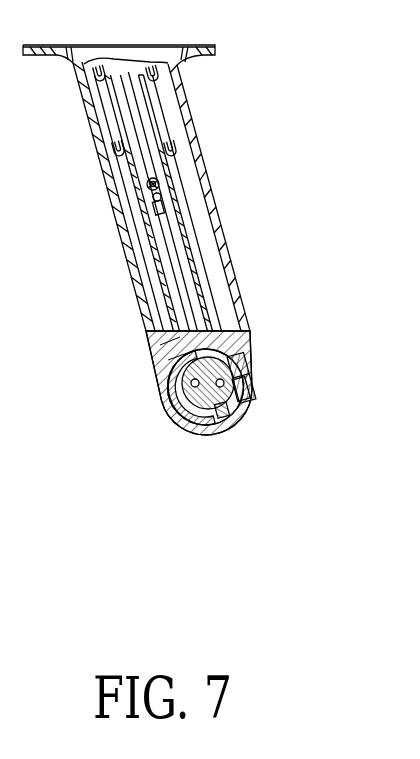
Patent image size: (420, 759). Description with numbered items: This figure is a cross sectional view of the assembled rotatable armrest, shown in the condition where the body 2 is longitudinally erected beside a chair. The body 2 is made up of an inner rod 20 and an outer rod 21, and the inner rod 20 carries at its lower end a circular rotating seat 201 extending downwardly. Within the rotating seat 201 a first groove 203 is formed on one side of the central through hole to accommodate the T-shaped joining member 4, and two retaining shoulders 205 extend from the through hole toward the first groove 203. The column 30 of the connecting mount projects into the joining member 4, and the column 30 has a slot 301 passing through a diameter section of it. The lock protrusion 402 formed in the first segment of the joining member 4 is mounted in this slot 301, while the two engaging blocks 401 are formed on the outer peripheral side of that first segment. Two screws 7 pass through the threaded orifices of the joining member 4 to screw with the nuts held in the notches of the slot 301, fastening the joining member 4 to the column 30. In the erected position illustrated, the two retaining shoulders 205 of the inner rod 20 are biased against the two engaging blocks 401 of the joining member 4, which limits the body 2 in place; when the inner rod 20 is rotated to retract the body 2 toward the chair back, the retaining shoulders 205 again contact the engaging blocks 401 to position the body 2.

The body 2 is at (207, 260).
The inner rod 20 is at (120, 237).
The outer rod 21 is at (198, 140).
The column 30 is at (199, 348).
The slot 301 is at (158, 358).
The joining member 4 is at (151, 392).
The screws 7 is at (192, 383).
The rotating seat 201 is at (252, 362).
The first groove 203 is at (247, 375).
The retaining shoulders 205 is at (224, 412).
The engaging blocks 401 is at (240, 397).
The lock protrusion 402 is at (228, 356).